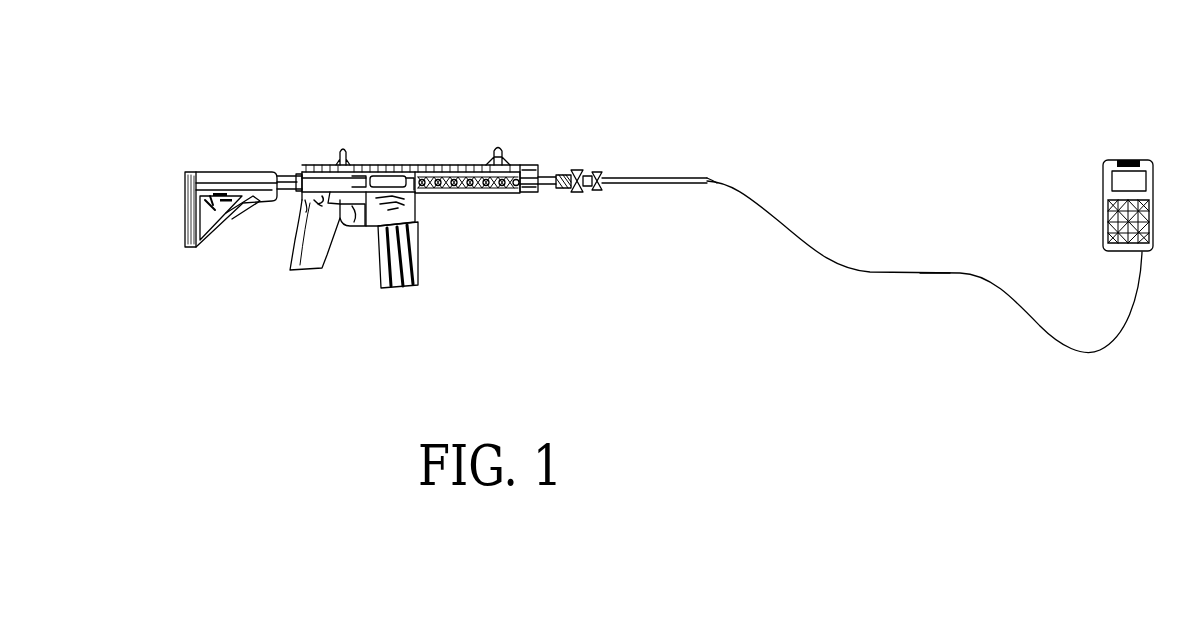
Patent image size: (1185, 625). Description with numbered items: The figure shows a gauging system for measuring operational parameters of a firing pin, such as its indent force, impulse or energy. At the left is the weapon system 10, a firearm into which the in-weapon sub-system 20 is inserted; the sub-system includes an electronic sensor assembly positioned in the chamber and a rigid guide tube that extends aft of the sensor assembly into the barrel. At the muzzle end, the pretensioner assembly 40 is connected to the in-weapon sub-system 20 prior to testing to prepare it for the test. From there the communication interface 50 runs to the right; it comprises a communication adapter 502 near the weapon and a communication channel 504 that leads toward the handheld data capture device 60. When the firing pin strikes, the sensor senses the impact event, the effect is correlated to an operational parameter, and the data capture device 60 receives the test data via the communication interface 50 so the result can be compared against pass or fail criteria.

The weapon system 10 is at (244, 171).
The in-weapon sub-system 20 is at (387, 178).
The pretensioner assembly 40 is at (598, 172).
The communication interface 50 is at (818, 252).
The communication adapter 502 is at (707, 180).
The communication channel 504 is at (928, 272).
The data capture device 60 is at (1107, 160).